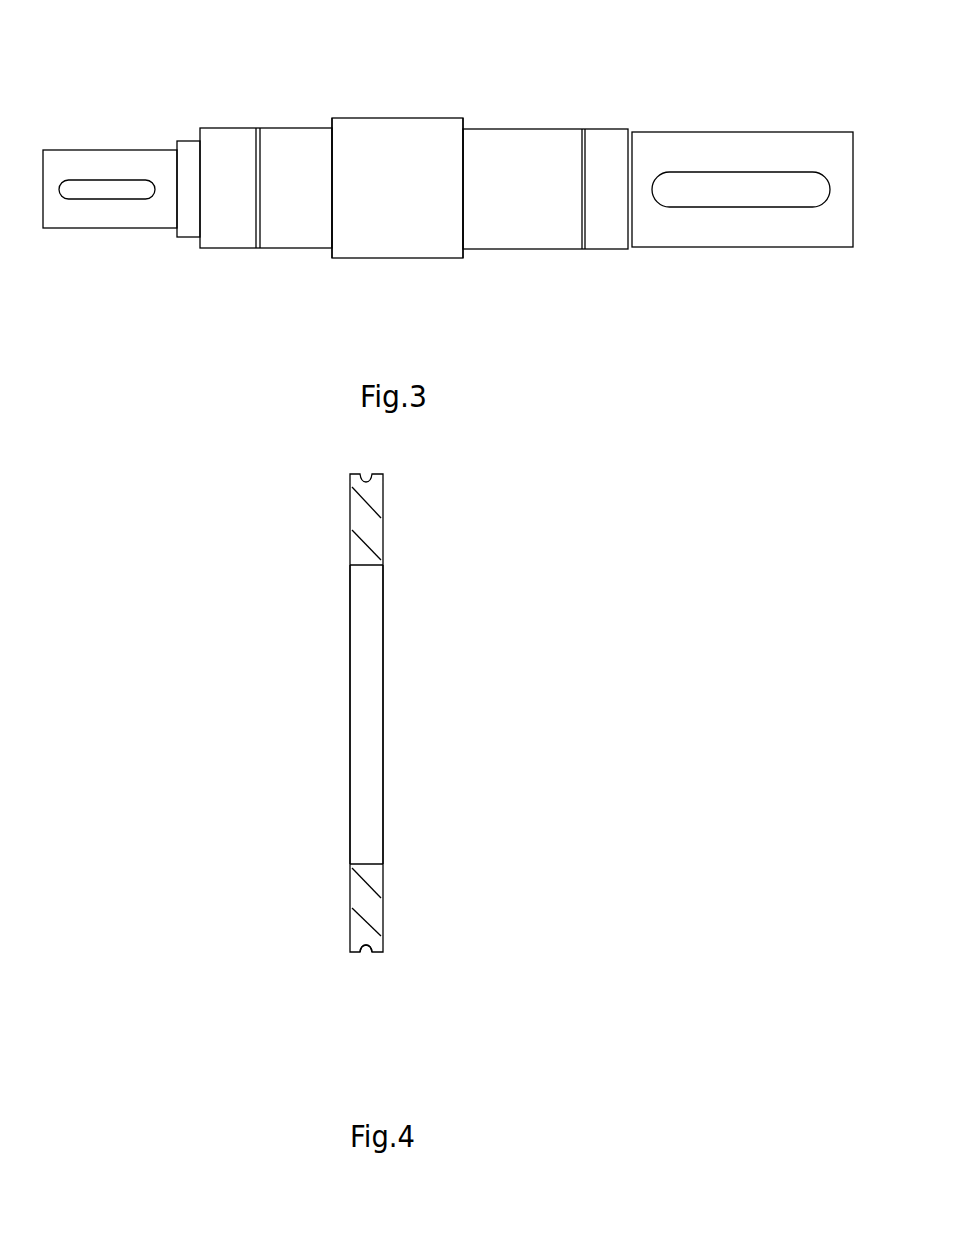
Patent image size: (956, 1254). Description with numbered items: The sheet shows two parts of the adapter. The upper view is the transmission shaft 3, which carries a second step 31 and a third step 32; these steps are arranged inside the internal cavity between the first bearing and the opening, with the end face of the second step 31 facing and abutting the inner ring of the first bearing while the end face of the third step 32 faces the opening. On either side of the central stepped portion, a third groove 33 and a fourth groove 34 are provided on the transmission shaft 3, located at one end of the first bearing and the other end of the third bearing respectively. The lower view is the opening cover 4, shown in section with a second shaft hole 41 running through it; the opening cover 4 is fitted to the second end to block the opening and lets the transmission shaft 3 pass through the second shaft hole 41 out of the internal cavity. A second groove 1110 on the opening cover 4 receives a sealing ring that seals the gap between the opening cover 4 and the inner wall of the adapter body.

In FIG. 3, the transmission shaft 3 is at (448, 203).
In FIG. 3, the second step 31 is at (332, 258).
In FIG. 3, the third step 32 is at (463, 258).
In FIG. 3, the third groove 33 is at (263, 150).
In FIG. 3, the fourth groove 34 is at (583, 168).
In FIG. 4, the opening cover 4 is at (447, 776).
In FIG. 4, the second shaft hole 41 is at (373, 710).
In FIG. 4, the second groove 1110 is at (365, 952).